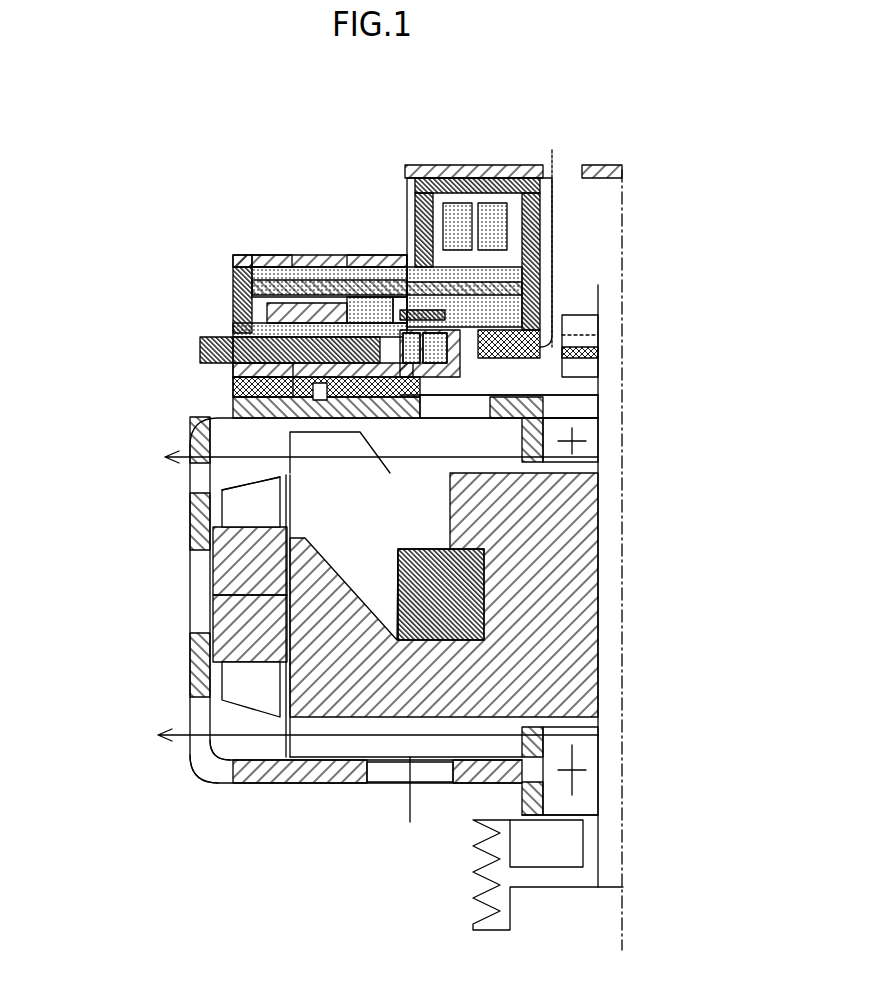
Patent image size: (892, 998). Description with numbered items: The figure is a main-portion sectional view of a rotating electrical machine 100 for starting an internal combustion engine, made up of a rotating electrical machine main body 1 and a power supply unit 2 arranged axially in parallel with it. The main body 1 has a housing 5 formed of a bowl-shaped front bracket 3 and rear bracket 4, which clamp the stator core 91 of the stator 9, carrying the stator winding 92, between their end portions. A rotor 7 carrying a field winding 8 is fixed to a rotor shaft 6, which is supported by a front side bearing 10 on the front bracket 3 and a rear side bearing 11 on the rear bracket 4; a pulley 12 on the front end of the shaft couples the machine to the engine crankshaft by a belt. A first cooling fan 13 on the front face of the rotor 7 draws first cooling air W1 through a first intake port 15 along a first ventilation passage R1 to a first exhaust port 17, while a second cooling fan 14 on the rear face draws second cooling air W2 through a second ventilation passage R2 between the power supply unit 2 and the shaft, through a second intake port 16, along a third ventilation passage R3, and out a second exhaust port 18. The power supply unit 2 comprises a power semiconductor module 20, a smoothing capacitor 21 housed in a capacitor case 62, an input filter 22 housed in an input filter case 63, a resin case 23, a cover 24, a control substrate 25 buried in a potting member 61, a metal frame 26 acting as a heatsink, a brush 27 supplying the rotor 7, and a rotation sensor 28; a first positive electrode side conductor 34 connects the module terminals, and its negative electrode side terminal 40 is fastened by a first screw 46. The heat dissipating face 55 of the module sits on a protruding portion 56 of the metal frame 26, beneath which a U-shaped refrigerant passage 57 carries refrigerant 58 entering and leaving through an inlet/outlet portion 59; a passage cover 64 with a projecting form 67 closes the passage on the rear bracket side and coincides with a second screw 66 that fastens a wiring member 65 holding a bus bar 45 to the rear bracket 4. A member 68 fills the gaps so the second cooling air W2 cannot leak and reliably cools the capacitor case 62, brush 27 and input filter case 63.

The rotating electrical machine 100 is at (109, 148).
The power supply unit 2 is at (88, 240).
The rotating electrical machine main body 1 is at (118, 582).
The stator 9 is at (88, 622).
The stator core 91 is at (207, 618).
The stator winding 92 is at (247, 670).
The front bracket 3 is at (320, 788).
The rear bracket 4 is at (535, 430).
The housing 5 is at (240, 787).
The rotor shaft 6 is at (602, 640).
The rotor 7 is at (565, 520).
The field winding 8 is at (460, 590).
The front side bearing 10 is at (580, 758).
The rear side bearing 11 is at (570, 450).
The pulley 12 is at (565, 878).
The first cooling fan 13 is at (365, 765).
The second cooling fan 14 is at (297, 462).
The first intake port 15 is at (440, 778).
The second intake port 16 is at (480, 412).
The first exhaust port 17 is at (203, 770).
The second exhaust port 18 is at (228, 500).
The power semiconductor module 20 is at (292, 305).
The smoothing capacitor 21 is at (455, 215).
The input filter 22 is at (400, 457).
The case 23 is at (240, 262).
The cover 24 is at (408, 170).
The control substrate 25 is at (300, 262).
The metal frame 26 is at (548, 300).
The brush 27 is at (600, 318).
The rotation sensor 28 is at (580, 360).
The first positive electrode side conductor 34 is at (395, 300).
The negative electrode side terminal 40 is at (345, 300).
The bus bar 45 is at (205, 395).
The first screw 46 is at (358, 258).
The heat dissipating face 55 is at (252, 262).
The protruding portion 56 is at (235, 290).
The refrigerant passage 57 is at (238, 330).
The refrigerant 58 is at (205, 345).
The inlet/outlet portion 59 is at (215, 340).
The potting member 61 is at (278, 262).
The capacitor case 62 is at (500, 180).
The input filter case 63 is at (515, 330).
The passage cover 64 is at (233, 372).
The wiring member 65 is at (228, 382).
The second screw 66 is at (245, 412).
The projecting form 67 is at (262, 258).
The member 68 is at (233, 383).
The first ventilation passage R1 is at (268, 790).
The second ventilation passage R2 is at (575, 335).
The third ventilation passage R3 is at (165, 457).
The first cooling air W1 is at (409, 804).
The second cooling air W2 is at (556, 243).